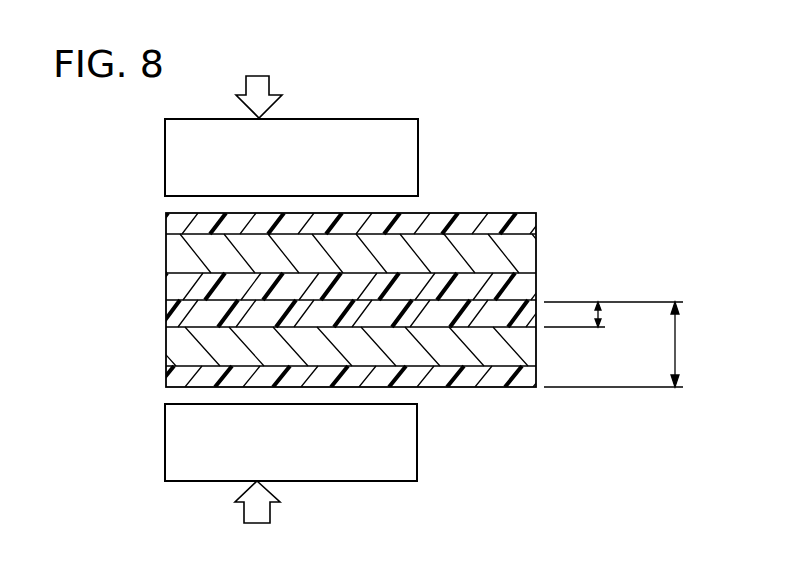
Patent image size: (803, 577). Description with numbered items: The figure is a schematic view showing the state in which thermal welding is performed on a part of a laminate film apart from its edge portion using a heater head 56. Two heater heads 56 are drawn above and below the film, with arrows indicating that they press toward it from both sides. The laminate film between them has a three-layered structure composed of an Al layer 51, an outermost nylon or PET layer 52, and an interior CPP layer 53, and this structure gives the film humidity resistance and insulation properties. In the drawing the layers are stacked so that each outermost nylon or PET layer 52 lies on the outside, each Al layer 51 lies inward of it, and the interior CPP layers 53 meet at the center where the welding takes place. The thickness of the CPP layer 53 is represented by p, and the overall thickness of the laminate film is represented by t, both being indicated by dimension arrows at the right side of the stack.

The Al layer 51 is at (177, 260).
The outermost nylon or PET layer 52 is at (177, 228).
The interior CPP layer 53 is at (177, 317).
The heater head 56 is at (182, 163).
The thickness of the CPP layer p is at (613, 312).
The thickness of the laminate film t is at (620, 344).